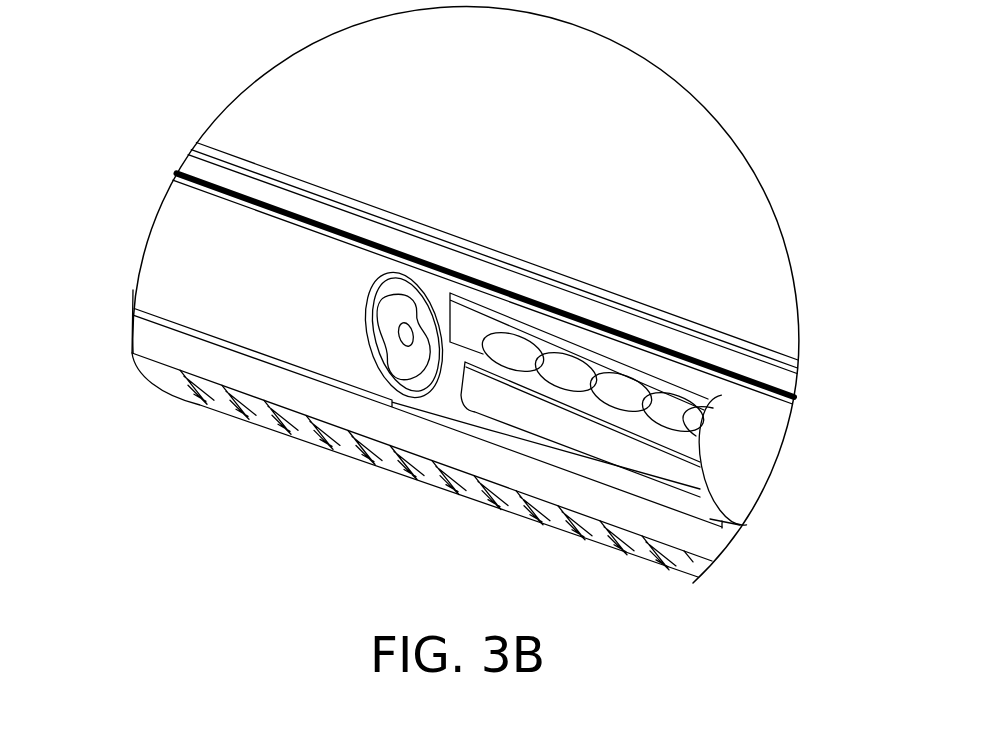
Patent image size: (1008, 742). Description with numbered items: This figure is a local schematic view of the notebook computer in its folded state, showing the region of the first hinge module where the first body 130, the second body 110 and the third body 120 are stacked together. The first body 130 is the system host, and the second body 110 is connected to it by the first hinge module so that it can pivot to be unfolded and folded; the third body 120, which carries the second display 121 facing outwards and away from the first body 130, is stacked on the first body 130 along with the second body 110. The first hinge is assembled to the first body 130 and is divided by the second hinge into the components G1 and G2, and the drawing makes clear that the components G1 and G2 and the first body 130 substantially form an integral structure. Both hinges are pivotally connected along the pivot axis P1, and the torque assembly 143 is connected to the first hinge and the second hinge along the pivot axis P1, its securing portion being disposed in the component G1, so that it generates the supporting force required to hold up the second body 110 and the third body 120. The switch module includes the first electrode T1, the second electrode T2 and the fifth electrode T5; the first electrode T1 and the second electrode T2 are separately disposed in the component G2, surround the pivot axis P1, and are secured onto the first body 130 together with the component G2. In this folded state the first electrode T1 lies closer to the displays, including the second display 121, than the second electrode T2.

The second display 121 is at (753, 226).
The pivot axis P1 is at (137, 237).
The first body 130 is at (140, 337).
The component of the first hinge G2 is at (230, 320).
The second body 110 is at (487, 338).
The torque assembly 143 is at (708, 420).
The third body 120 is at (787, 386).
The component of the first hinge G1 is at (757, 473).
The second electrode T2 is at (408, 272).
The first electrode T1 is at (420, 293).
The fifth electrode T5 is at (412, 332).